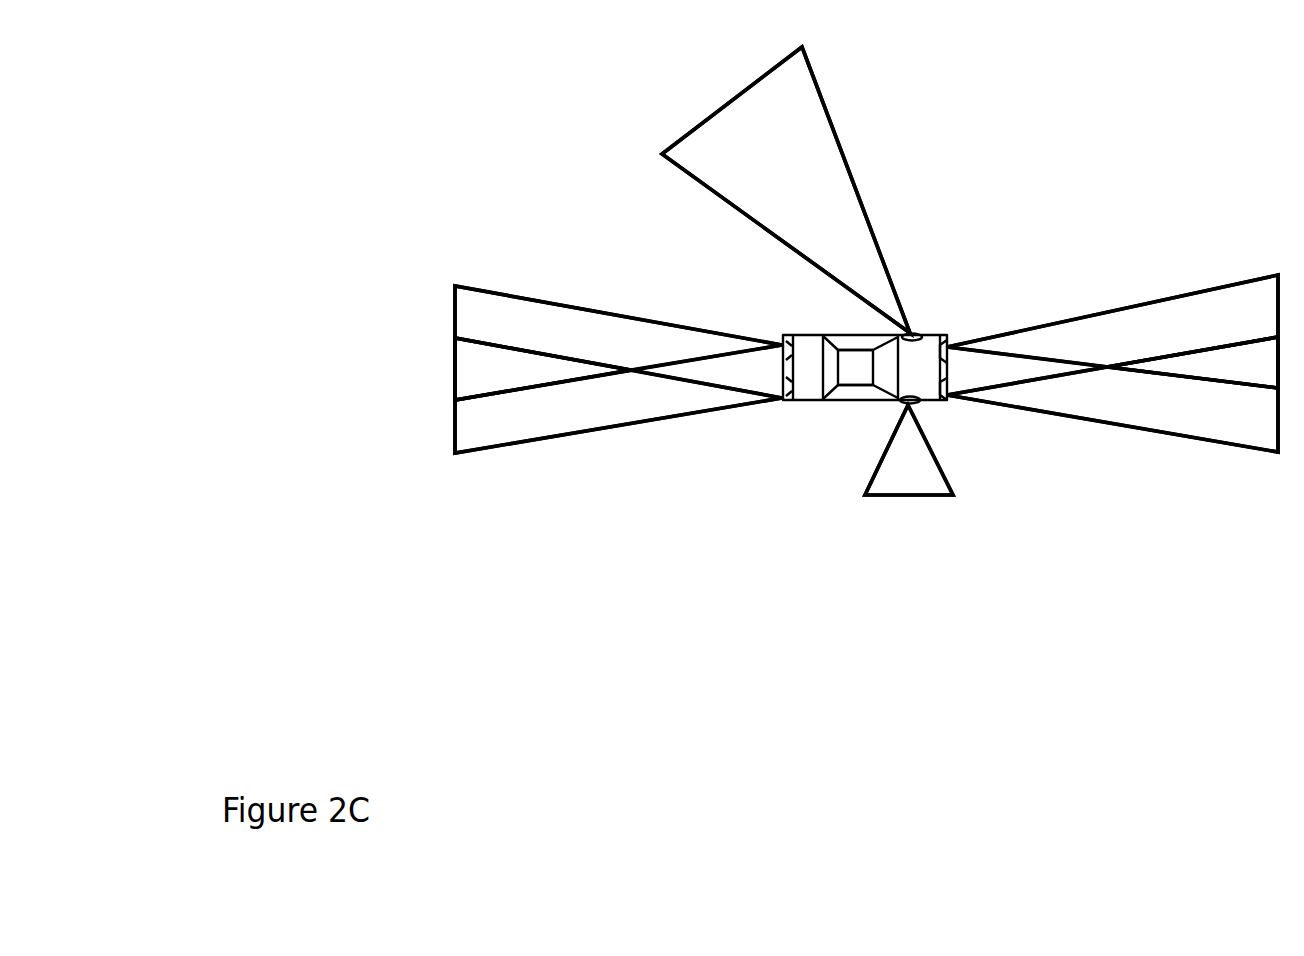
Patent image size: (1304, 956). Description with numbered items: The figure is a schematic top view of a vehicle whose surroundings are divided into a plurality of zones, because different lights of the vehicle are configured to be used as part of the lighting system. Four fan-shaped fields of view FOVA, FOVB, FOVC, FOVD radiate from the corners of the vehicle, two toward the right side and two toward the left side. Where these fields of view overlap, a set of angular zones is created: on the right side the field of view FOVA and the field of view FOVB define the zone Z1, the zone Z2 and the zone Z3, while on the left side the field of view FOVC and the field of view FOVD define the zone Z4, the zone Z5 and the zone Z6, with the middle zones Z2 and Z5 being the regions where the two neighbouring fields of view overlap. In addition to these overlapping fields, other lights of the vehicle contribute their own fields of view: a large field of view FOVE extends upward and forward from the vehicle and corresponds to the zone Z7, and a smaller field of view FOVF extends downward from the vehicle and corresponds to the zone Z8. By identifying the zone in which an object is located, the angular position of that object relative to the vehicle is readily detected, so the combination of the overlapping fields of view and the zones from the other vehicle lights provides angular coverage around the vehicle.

The field of view FOVA is at (1170, 296).
The field of view FOVB is at (1069, 418).
The field of view FOVC is at (590, 305).
The field of view FOVD is at (590, 434).
The field of view FOVE is at (850, 164).
The field of view FOVF is at (918, 498).
The zone Z1 is at (1112, 321).
The zone Z2 is at (1192, 362).
The zone Z3 is at (1112, 409).
The zone Z4 is at (618, 328).
The zone Z5 is at (543, 369).
The zone Z6 is at (618, 411).
The zone Z7 is at (786, 190).
The zone Z8 is at (909, 450).